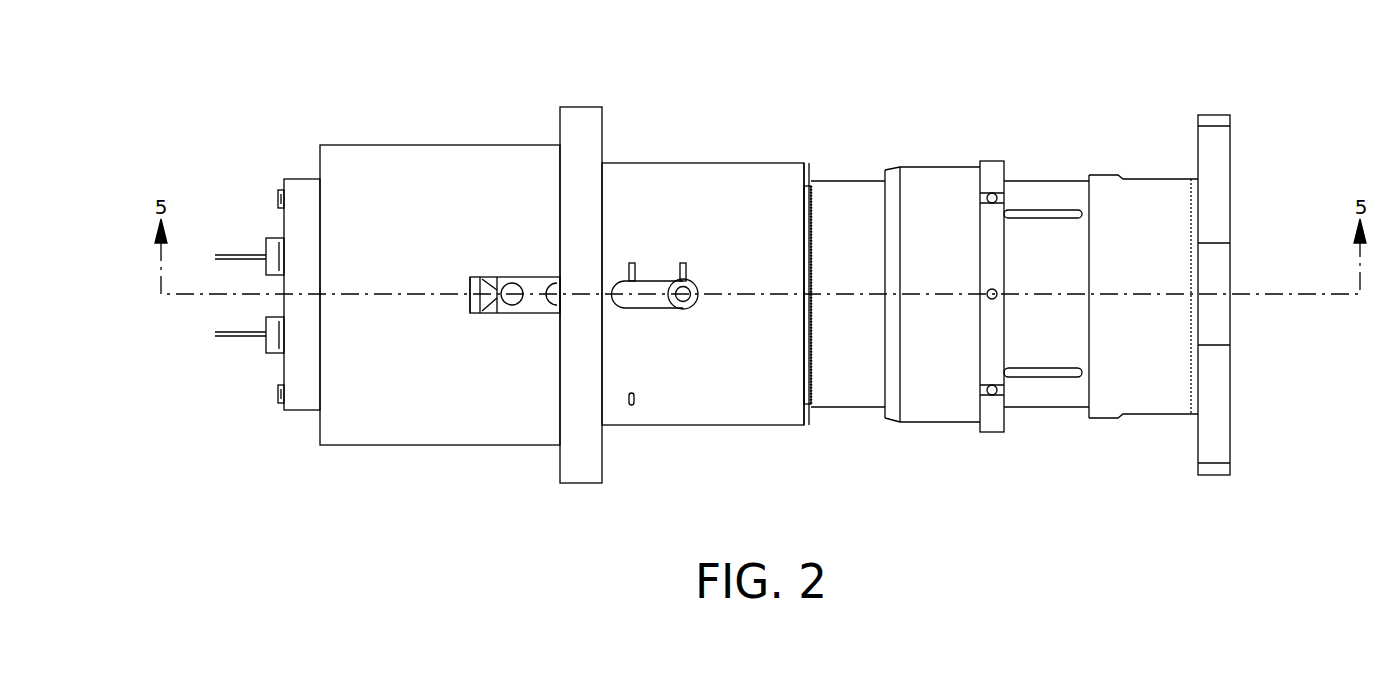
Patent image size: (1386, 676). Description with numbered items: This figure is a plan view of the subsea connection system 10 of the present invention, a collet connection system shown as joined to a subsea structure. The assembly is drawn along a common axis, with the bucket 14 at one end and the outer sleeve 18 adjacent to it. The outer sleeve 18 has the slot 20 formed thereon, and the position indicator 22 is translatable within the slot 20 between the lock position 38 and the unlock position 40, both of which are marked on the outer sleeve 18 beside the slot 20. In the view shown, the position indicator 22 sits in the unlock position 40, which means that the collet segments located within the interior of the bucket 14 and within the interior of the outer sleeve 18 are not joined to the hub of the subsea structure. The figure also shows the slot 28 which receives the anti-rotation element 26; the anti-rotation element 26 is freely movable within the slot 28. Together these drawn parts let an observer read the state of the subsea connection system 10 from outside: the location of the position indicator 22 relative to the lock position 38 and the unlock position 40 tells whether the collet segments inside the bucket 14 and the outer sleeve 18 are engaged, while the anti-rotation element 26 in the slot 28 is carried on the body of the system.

The subsea connection system 10 is at (760, 76).
The bucket 14 is at (465, 160).
The outer sleeve 18 is at (777, 200).
The slot 20 is at (653, 308).
The position indicator 22 is at (683, 310).
The anti-rotation element 26 is at (528, 283).
The slot 28 is at (488, 314).
The lock position 38 is at (634, 201).
The unlock position 40 is at (680, 186).